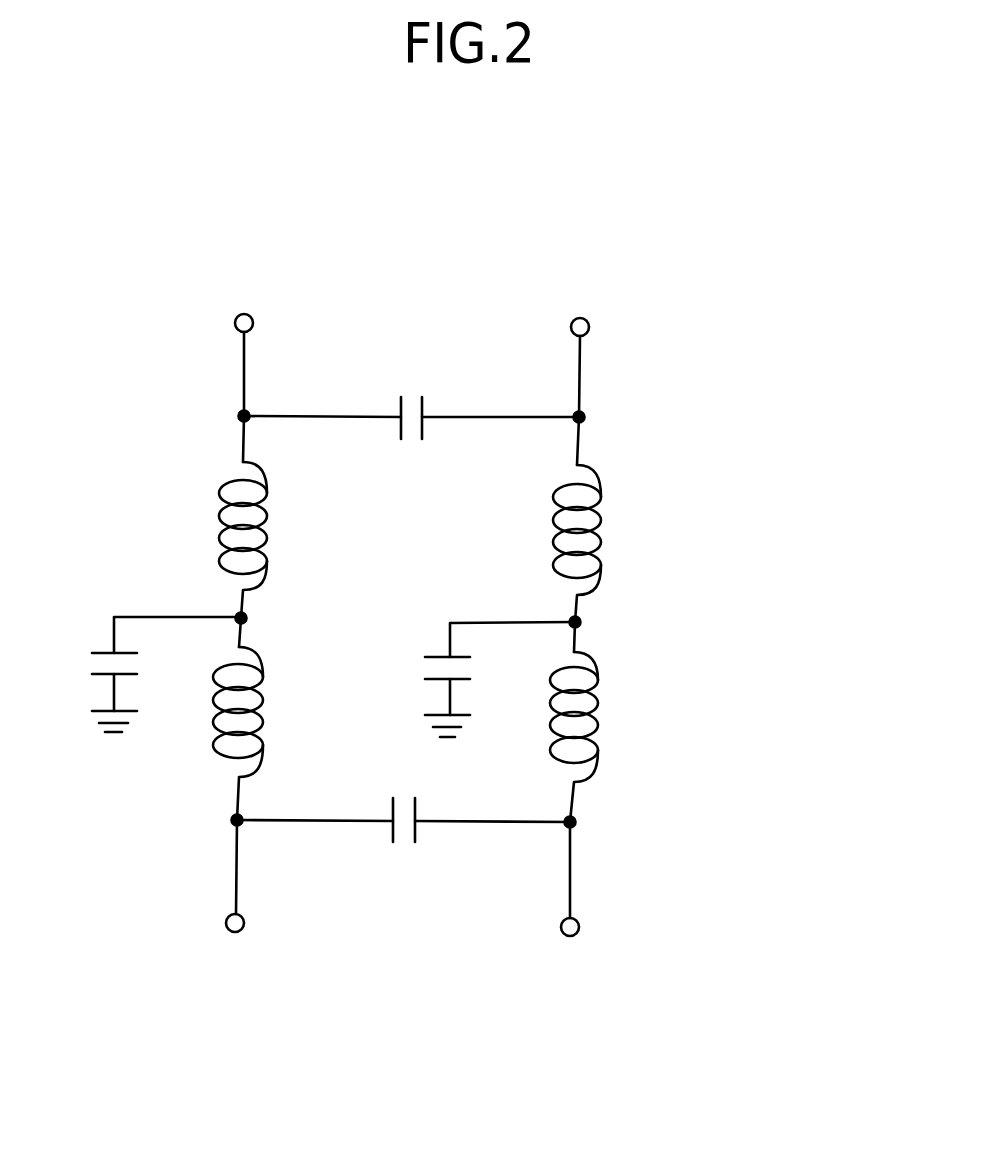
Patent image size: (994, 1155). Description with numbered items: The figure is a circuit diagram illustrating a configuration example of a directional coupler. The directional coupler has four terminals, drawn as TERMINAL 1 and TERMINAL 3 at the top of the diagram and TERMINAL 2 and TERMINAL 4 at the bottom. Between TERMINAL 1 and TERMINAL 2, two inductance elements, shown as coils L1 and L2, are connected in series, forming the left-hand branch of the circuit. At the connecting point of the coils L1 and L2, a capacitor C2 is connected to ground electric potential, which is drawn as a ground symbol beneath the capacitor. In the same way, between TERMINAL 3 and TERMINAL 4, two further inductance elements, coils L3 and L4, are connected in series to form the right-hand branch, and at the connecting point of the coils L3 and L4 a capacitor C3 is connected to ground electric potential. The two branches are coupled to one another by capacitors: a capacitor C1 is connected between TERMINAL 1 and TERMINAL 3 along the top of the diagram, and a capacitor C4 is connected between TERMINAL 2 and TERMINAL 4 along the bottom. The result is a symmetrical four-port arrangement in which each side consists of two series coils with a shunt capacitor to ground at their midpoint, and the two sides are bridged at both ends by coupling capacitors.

The coil L1 is at (260, 517).
The coil L2 is at (257, 719).
The coil L3 is at (597, 519).
The coil L4 is at (593, 722).
The capacitor C1 is at (411, 399).
The capacitor C2 is at (140, 674).
The capacitor C3 is at (474, 679).
The capacitor C4 is at (403, 841).
The terminal TERMINAL 1 is at (243, 342).
The terminal TERMINAL 2 is at (233, 904).
The terminal TERMINAL 3 is at (581, 342).
The terminal TERMINAL 4 is at (568, 905).